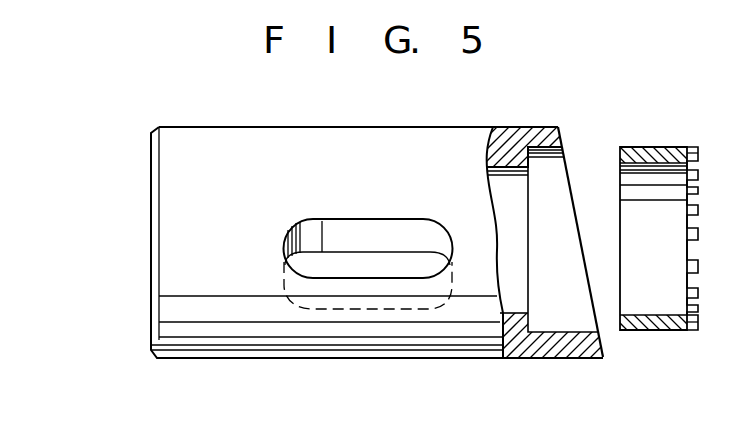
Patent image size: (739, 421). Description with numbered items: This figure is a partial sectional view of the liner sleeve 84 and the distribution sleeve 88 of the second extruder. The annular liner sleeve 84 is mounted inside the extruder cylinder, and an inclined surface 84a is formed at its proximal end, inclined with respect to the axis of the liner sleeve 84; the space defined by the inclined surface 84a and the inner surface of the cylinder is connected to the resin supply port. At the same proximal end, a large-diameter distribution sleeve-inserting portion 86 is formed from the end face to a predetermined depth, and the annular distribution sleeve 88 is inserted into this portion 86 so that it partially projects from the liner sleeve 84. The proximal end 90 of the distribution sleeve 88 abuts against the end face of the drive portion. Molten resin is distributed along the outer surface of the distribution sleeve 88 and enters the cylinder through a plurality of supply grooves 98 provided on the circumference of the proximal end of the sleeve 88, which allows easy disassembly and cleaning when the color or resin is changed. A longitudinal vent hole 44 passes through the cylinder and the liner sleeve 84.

The liner sleeve 84 is at (326, 126).
The inclined surface 84a is at (566, 175).
The distribution sleeve-inserting portion 86 is at (553, 147).
The longitudinal vent hole 44 is at (347, 273).
The distribution sleeve 88 is at (667, 147).
The supply grooves 98 is at (699, 240).
The proximal end 90 is at (698, 328).